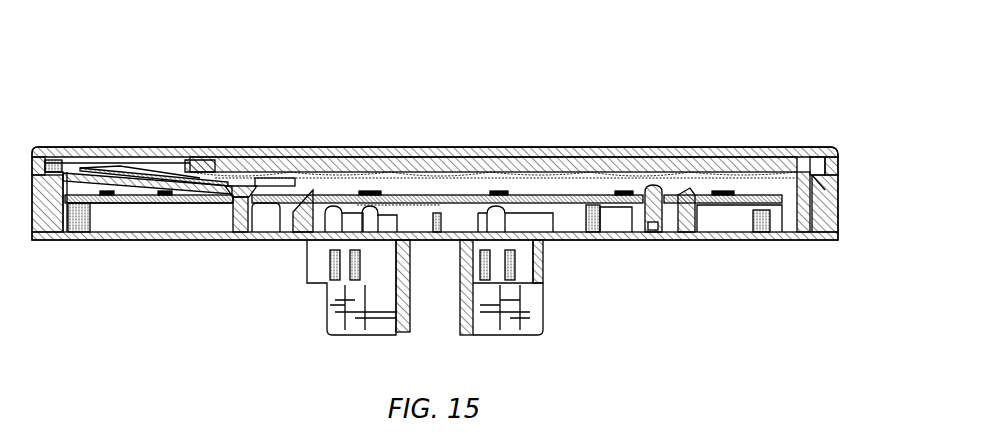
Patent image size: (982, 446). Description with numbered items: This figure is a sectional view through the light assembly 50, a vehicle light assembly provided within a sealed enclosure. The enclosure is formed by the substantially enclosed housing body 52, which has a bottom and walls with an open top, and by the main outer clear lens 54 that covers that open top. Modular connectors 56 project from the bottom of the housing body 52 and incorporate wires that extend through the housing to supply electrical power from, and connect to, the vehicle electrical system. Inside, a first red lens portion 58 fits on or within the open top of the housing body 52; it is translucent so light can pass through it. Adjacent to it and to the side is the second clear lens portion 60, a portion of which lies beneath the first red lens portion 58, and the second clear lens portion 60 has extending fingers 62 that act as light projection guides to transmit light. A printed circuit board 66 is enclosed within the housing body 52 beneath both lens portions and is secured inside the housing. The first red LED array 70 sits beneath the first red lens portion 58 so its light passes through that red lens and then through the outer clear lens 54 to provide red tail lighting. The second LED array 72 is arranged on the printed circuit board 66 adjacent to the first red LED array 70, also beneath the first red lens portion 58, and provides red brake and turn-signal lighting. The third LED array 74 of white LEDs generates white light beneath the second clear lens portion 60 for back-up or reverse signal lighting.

The light assembly 50 is at (546, 46).
The housing body 52 is at (832, 232).
The outer clear lens 54 is at (616, 193).
The modular connectors 56 is at (530, 317).
The first red lens portion 58 is at (443, 165).
The second clear lens portion 60 is at (138, 178).
The extending fingers 62 is at (188, 184).
The printed circuit board 66 is at (128, 205).
The first red LED array 70 is at (369, 190).
The second LED array 72 is at (205, 206).
The third LED array 74 is at (101, 172).